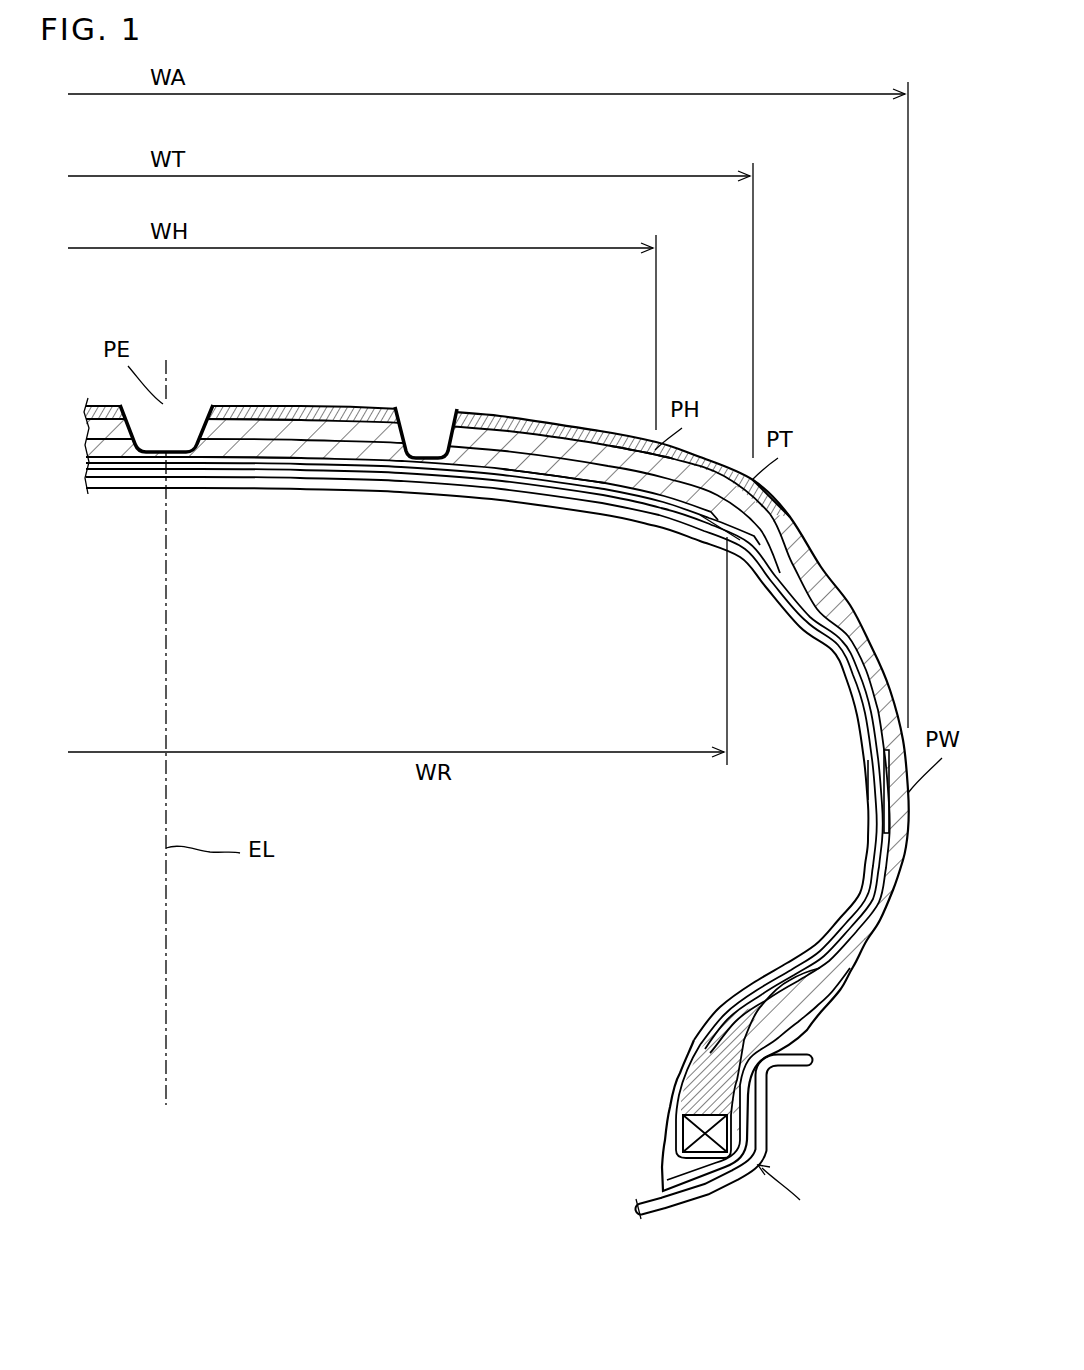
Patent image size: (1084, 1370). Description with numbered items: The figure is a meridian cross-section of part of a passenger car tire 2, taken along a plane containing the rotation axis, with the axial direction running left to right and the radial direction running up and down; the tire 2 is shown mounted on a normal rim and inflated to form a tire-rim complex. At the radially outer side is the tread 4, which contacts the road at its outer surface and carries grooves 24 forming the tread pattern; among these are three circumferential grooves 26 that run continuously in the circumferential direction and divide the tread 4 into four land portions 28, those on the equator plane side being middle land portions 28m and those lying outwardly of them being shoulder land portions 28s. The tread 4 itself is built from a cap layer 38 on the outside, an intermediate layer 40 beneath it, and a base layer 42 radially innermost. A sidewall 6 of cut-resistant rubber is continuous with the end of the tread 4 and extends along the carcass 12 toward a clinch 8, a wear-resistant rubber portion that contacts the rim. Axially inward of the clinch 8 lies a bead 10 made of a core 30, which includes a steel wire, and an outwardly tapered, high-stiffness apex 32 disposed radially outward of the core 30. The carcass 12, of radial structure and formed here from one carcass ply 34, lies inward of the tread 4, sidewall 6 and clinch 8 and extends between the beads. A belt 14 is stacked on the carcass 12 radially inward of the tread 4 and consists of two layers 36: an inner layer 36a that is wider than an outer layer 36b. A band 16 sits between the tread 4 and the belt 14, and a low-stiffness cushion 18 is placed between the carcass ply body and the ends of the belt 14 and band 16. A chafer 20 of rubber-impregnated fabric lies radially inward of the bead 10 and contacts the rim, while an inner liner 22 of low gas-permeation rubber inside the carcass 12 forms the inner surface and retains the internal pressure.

The tire 2 is at (812, 356).
The tread 4 is at (551, 420).
The sidewall 6 is at (900, 807).
The clinch 8 is at (798, 1021).
The bead 10 is at (598, 1066).
The carcass 12 is at (274, 490).
The belt 14 is at (460, 592).
The band 16 is at (270, 452).
The cushion 18 is at (712, 530).
The chafer 20 is at (661, 1174).
The inner liner 22 is at (863, 814).
The groove 24 is at (193, 408).
The circumferential groove 26 is at (288, 387).
The land portion 28 is at (603, 434).
The middle land portion 28m is at (250, 419).
The shoulder land portion 28s is at (642, 452).
The core 30 is at (686, 1130).
The apex 32 is at (708, 1080).
The carcass ply 34 is at (204, 490).
The layer 36 is at (358, 483).
The inner layer 36a is at (423, 527).
The outer layer 36b is at (484, 759).
The cap layer 38 is at (474, 414).
The intermediate layer 40 is at (507, 444).
The base layer 42 is at (544, 468).